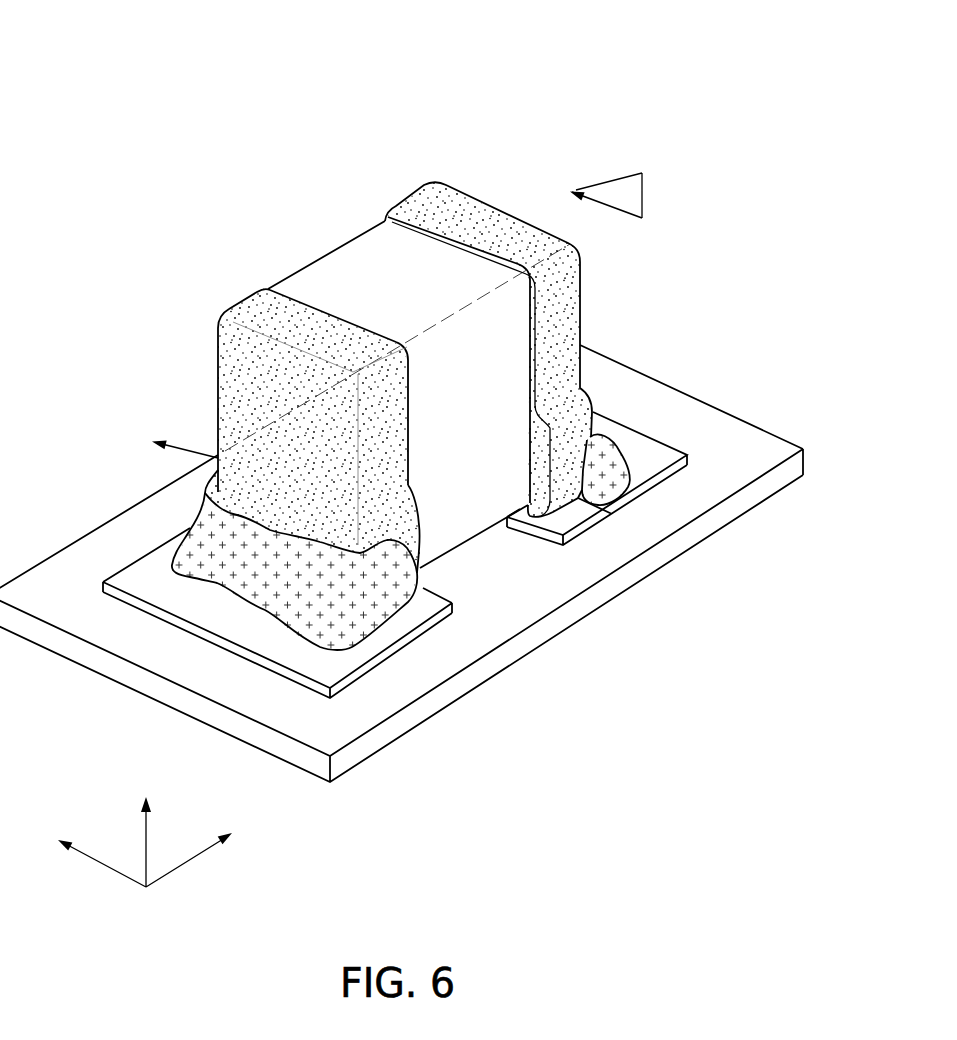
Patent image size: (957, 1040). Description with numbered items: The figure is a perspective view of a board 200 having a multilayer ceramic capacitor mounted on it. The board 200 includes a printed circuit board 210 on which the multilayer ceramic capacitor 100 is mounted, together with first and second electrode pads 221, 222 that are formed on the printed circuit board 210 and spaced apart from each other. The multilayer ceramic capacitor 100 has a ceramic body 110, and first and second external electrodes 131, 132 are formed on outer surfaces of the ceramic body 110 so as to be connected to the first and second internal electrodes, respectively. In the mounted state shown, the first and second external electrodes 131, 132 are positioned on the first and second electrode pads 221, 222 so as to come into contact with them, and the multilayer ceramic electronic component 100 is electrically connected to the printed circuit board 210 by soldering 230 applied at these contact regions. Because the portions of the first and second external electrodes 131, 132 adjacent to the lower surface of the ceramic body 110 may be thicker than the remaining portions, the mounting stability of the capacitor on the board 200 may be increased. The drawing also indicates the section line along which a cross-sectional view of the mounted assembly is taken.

The board 200 is at (128, 52).
The multilayer ceramic capacitor 100 is at (260, 219).
The ceramic body 110 is at (347, 267).
The first external electrode 131 is at (248, 307).
The second external electrode 132 is at (422, 200).
The printed circuit board 210 is at (543, 630).
The first electrode pad 221 is at (327, 668).
The second electrode pad 222 is at (658, 457).
The soldering 230 is at (197, 547).